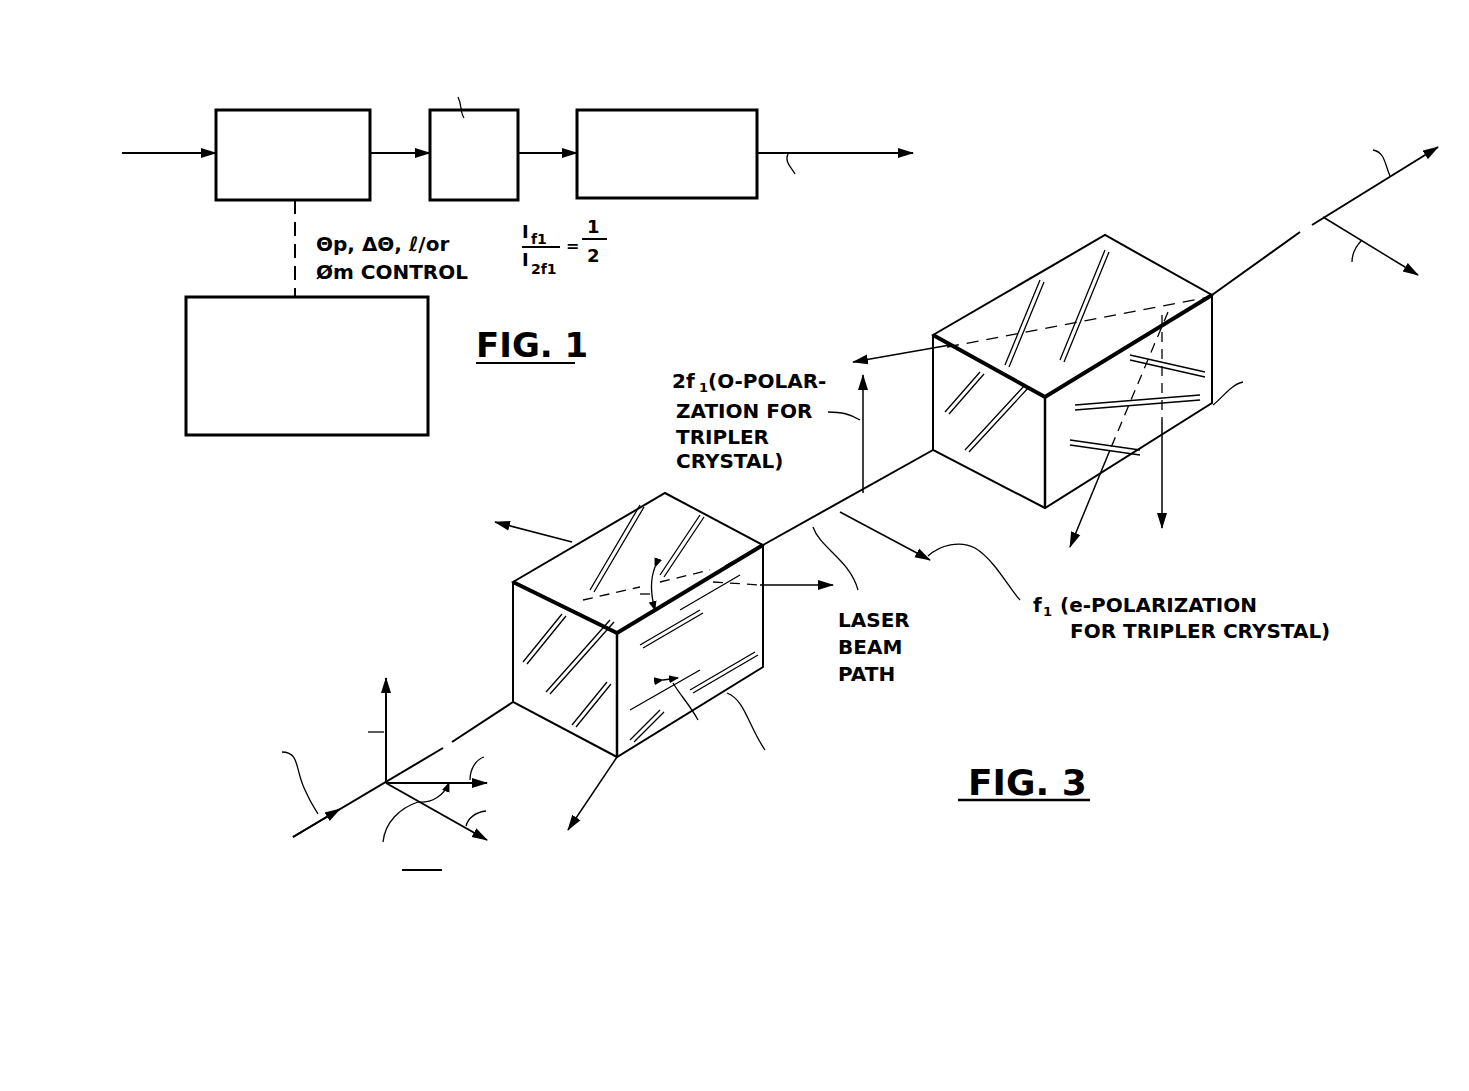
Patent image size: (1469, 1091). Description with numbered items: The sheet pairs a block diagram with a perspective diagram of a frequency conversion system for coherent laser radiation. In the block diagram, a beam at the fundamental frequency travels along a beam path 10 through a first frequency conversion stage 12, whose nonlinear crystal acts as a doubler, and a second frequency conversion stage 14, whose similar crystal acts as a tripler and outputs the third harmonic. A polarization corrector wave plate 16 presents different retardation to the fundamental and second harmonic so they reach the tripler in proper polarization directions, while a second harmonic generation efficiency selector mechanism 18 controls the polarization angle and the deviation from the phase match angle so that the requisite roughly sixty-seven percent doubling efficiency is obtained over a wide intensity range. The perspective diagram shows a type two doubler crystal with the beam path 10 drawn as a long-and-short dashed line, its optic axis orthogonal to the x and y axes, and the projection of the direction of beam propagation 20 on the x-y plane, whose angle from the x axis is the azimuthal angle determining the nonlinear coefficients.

In FIG. 1, the beam path 10 is at (190, 152).
In FIG. 3, the beam path 10 is at (482, 722).
In FIG. 1, the first frequency conversion stage 12 is at (304, 110).
In FIG. 3, the first frequency conversion stage 12 is at (652, 740).
In FIG. 1, the second frequency conversion stage 14 is at (758, 130).
In FIG. 3, the second frequency conversion stage 14 is at (1213, 318).
In FIG. 1, the polarization corrector wave plate 16 is at (430, 112).
In FIG. 1, the second harmonic generation efficiency selector mechanism 18 is at (428, 408).
In FIG. 3, the projection of the direction of beam propagation 20 is at (737, 678).